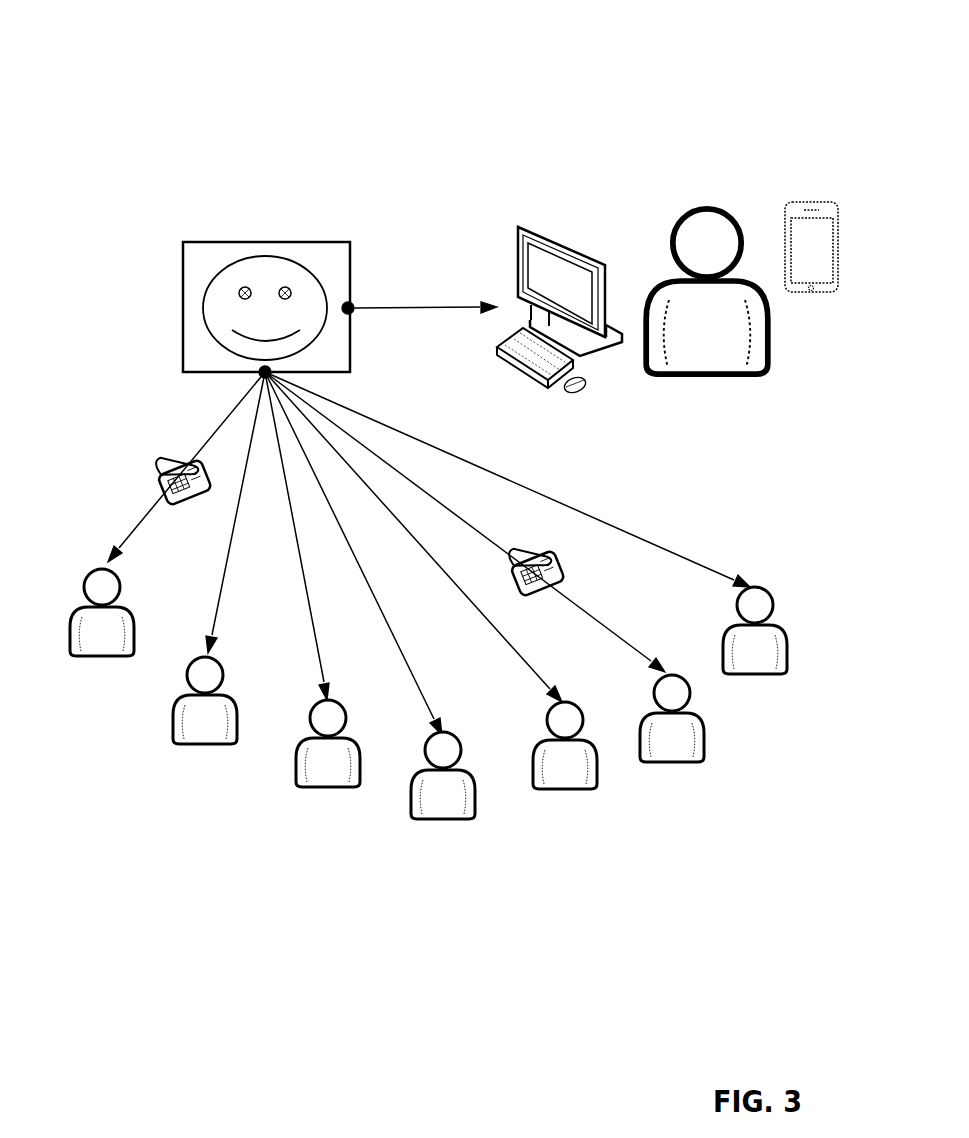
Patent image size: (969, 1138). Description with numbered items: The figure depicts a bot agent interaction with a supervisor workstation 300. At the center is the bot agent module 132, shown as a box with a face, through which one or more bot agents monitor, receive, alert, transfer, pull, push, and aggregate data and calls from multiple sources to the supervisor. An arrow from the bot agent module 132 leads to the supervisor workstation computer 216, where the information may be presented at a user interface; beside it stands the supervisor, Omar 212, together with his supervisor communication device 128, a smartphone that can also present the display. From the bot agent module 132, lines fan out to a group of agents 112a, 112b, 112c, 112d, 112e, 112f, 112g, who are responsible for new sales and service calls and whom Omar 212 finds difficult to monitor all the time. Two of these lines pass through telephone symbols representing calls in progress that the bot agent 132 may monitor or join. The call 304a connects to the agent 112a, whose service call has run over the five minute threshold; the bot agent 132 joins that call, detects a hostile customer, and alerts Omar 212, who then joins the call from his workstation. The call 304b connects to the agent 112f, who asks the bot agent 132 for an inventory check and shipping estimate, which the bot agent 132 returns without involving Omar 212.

The supervisor workstation 300 is at (104, 69).
The bot agent module 132 is at (266, 241).
The supervisor workstation computer 216 is at (567, 240).
The Omar 212 is at (708, 206).
The supervisor communication device 128 is at (800, 201).
The call 304a is at (178, 458).
The call 304b is at (536, 548).
The agent 112a is at (97, 660).
The agent 112b is at (213, 747).
The agent 112c is at (326, 790).
The agent 112d is at (440, 822).
The agent 112e is at (560, 792).
The agent 112f is at (670, 765).
The agent 112g is at (768, 675).